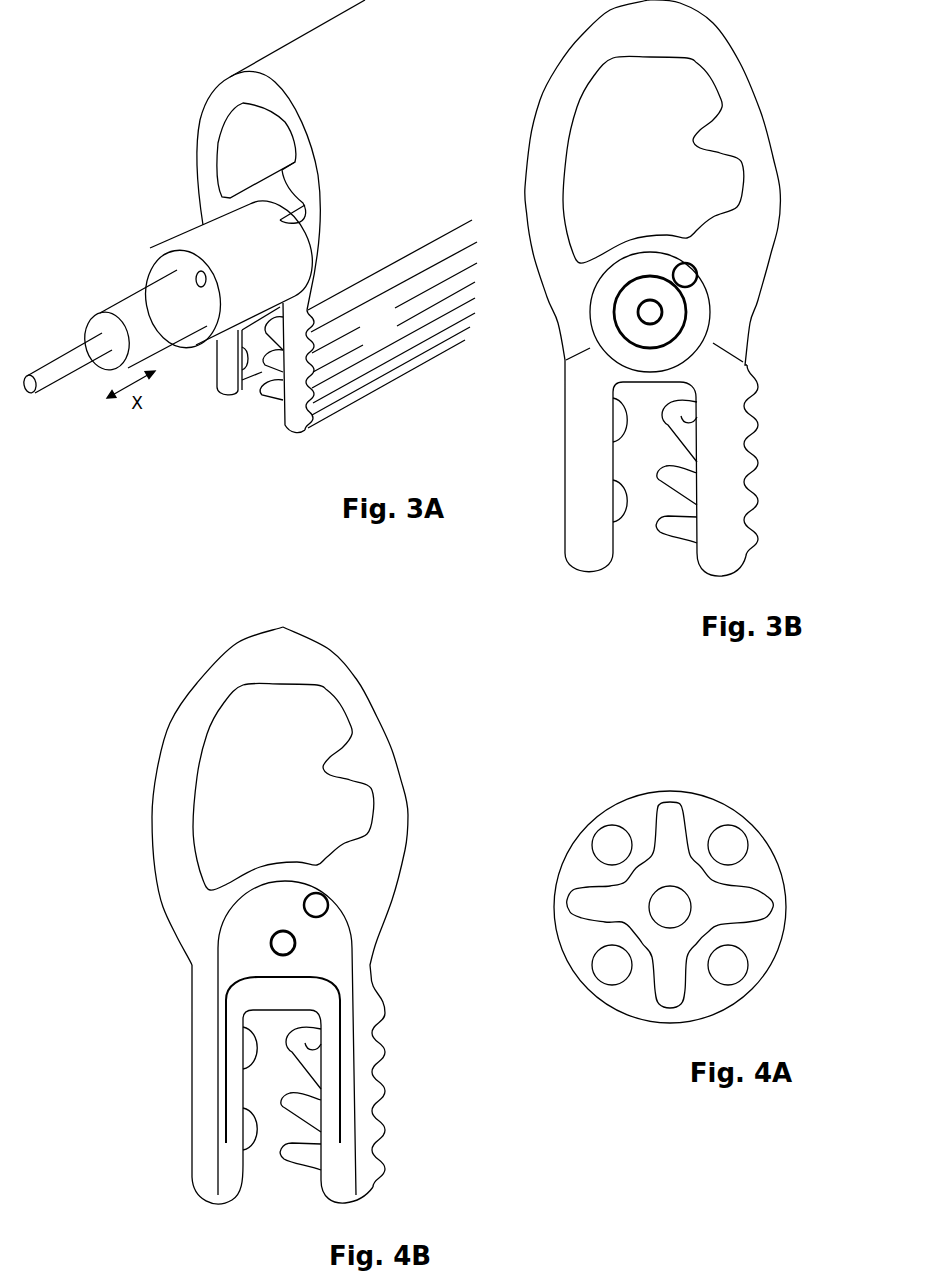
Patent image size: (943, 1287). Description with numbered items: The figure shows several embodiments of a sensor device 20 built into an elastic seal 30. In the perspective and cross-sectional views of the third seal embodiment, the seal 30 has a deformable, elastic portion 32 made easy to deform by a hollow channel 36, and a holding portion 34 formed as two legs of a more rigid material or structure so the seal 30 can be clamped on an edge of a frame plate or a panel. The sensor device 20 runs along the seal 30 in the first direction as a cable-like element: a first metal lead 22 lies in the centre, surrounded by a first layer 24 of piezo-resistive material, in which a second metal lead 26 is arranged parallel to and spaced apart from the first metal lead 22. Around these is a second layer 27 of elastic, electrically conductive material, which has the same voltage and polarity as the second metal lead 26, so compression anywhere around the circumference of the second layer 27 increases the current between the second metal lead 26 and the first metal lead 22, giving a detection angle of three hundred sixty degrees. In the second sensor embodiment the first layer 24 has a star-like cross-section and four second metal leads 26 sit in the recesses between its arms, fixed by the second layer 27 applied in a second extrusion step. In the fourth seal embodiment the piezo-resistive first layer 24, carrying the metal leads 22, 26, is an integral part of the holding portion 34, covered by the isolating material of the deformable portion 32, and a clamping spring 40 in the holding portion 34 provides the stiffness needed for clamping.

In FIG. 4A, the sensor device 20 is at (757, 813).
In FIG. 3A, the first metal lead 22 is at (52, 372).
In FIG. 3B, the first metal lead 22 is at (655, 312).
In FIG. 4B, the first metal lead 22 is at (290, 941).
In FIG. 4A, the first metal lead 22 is at (668, 908).
In FIG. 3A, the first layer 24 is at (141, 329).
In FIG. 3B, the first layer 24 is at (657, 335).
In FIG. 4B, the first layer 24 is at (258, 932).
In FIG. 4A, the first layer 24 is at (672, 837).
In FIG. 3A, the second metal lead 26 is at (201, 271).
In FIG. 3B, the second metal lead 26 is at (688, 272).
In FIG. 4B, the second metal lead 26 is at (319, 906).
In FIG. 4A, the second metal lead 26 is at (607, 848).
In FIG. 3A, the second layer 27 is at (232, 279).
In FIG. 3B, the second layer 27 is at (622, 350).
In FIG. 4A, the second layer 27 is at (698, 815).
In FIG. 3A, the seal 30 is at (233, 36).
In FIG. 3B, the seal 30 is at (546, 62).
In FIG. 4B, the seal 30 is at (174, 691).
In FIG. 3A, the deformable portion 32 is at (347, 171).
In FIG. 3B, the deformable portion 32 is at (634, 47).
In FIG. 4B, the deformable portion 32 is at (261, 672).
In FIG. 3A, the holding portion 34 is at (367, 337).
In FIG. 3B, the holding portion 34 is at (711, 509).
In FIG. 4B, the holding portion 34 is at (179, 1136).
In FIG. 3A, the hollow channel 36 is at (241, 165).
In FIG. 3B, the hollow channel 36 is at (625, 152).
In FIG. 4B, the hollow channel 36 is at (251, 781).
In FIG. 4B, the clamping spring 40 is at (342, 1030).